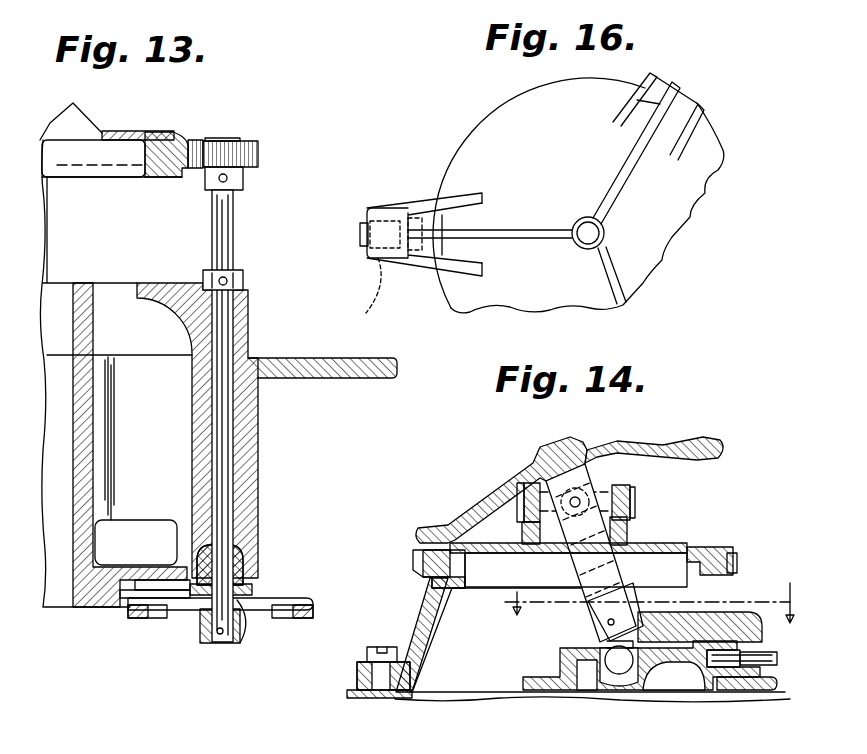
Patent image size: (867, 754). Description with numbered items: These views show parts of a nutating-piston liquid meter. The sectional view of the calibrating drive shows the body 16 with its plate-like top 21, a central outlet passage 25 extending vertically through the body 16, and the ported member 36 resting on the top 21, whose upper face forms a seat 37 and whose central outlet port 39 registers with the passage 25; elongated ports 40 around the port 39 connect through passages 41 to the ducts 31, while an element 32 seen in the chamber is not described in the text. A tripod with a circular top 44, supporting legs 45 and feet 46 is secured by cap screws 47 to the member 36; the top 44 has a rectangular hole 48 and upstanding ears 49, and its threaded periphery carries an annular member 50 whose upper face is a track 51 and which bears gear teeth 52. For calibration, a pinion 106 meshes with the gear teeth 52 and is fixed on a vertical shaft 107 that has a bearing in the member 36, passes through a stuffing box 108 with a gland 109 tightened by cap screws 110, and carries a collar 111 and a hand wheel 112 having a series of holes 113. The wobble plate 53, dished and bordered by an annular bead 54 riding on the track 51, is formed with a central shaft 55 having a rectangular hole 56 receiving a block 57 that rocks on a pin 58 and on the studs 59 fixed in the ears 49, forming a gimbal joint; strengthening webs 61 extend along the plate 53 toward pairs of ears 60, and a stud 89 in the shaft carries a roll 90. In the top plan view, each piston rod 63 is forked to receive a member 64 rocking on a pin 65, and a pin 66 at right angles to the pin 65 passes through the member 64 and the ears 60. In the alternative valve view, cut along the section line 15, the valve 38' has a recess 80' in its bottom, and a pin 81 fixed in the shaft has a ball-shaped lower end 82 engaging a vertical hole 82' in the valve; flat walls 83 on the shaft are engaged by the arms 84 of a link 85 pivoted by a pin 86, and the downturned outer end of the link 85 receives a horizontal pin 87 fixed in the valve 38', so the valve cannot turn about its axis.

In FIG. 13, the outlet passage 25 is at (57, 494).
In FIG. 13, the rectangular hole 48 is at (73, 135).
In FIG. 13, the circular top 44 is at (122, 136).
In FIG. 14, the circular top 44 is at (550, 565).
In FIG. 13, the track 51 is at (176, 130).
In FIG. 14, the track 51 is at (717, 546).
In FIG. 13, the gear teeth 52 is at (193, 141).
In FIG. 14, the gear teeth 52 is at (738, 562).
In FIG. 13, the pinion 106 is at (260, 153).
In FIG. 13, the annular member 50 is at (182, 176).
In FIG. 14, the annular member 50 is at (714, 603).
In FIG. 13, the supporting legs 45 is at (45, 229).
In FIG. 14, the supporting legs 45 is at (418, 608).
In FIG. 13, the central outlet port 39 is at (60, 326).
In FIG. 13, the body 16 is at (258, 453).
In FIG. 13, the elongated ports 40 is at (117, 292).
In FIG. 13, the passages 41 is at (140, 341).
In FIG. 13, the ported member 36 is at (247, 333).
In FIG. 14, the ported member 36 is at (455, 699).
In FIG. 13, the plate-like top 21 is at (322, 374).
In FIG. 13, the ducts 31 is at (133, 438).
In FIG. 13, the slot 32 is at (147, 531).
In FIG. 13, the stuffing box 108 is at (248, 562).
In FIG. 13, the gland 109 is at (252, 591).
In FIG. 13, the hand wheel 112 is at (180, 612).
In FIG. 13, the holes 113 is at (148, 618).
In FIG. 13, the cap screws 110 is at (241, 640).
In FIG. 13, the vertical shaft 107 is at (232, 221).
In FIG. 13, the collar 111 is at (244, 283).
In FIG. 16, the wobble plate 53 is at (578, 195).
In FIG. 14, the wobble plate 53 is at (656, 445).
In FIG. 16, the strengthening webs 61 is at (620, 193).
In FIG. 16, the roll 90 is at (606, 236).
In FIG. 16, the stud 89 is at (583, 246).
In FIG. 16, the ears 60 is at (398, 211).
In FIG. 16, the piston rod 63 is at (364, 245).
In FIG. 16, the pin 65 is at (362, 239).
In FIG. 16, the pin 66 is at (394, 276).
In FIG. 16, the member 64 is at (380, 260).
In FIG. 14, the rectangular hole 56 is at (614, 440).
In FIG. 14, the annular bead 54 is at (716, 457).
In FIG. 14, the upstanding ears 49 is at (529, 486).
In FIG. 14, the studs 59 is at (523, 500).
In FIG. 14, the central shaft 55 is at (591, 553).
In FIG. 14, the pin 58 is at (571, 510).
In FIG. 14, the block 57 is at (603, 492).
In FIG. 14, the section line 15 is at (641, 590).
In FIG. 14, the link 85 is at (735, 615).
In FIG. 14, the flat parallel walls 83 is at (616, 592).
In FIG. 14, the arms 84 is at (632, 600).
In FIG. 14, the pin 81 is at (592, 609).
In FIG. 14, the pin 86 is at (609, 623).
In FIG. 14, the lower end 82 is at (641, 686).
In FIG. 14, the vertical hole 82' is at (626, 693).
In FIG. 14, the recess 80' is at (702, 707).
In FIG. 14, the seat 37 is at (490, 683).
In FIG. 14, the horizontal pin 87 is at (781, 654).
In FIG. 14, the valve 38' is at (747, 704).
In FIG. 14, the cap screws 47 is at (374, 648).
In FIG. 14, the feet 46 is at (350, 689).